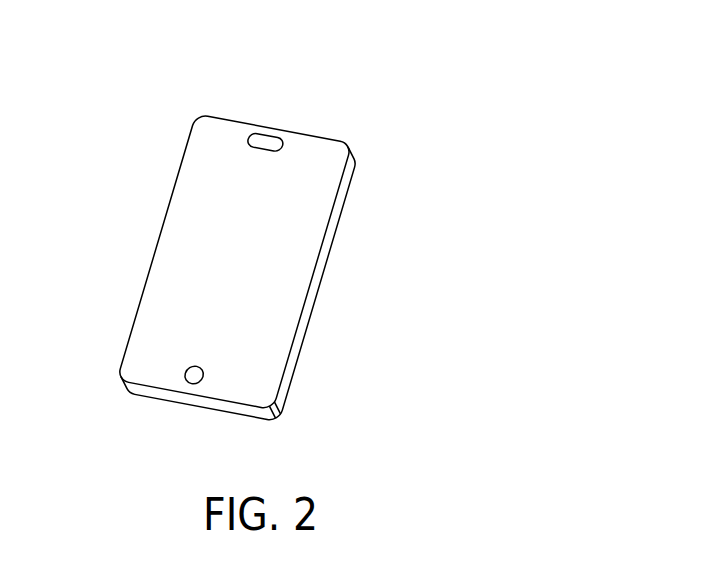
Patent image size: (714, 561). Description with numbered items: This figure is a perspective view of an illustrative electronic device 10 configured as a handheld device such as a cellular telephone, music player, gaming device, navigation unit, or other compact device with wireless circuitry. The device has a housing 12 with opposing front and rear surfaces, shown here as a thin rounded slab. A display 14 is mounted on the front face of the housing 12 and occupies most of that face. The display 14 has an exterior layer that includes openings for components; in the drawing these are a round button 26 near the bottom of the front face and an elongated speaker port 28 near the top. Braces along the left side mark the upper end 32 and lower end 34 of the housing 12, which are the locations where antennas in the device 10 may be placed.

The electronic device 10 is at (433, 129).
The housing 12 is at (334, 241).
The display 14 is at (288, 285).
The button 26 is at (193, 386).
The speaker port 28 is at (280, 138).
The upper end 32 is at (188, 109).
The lower end 34 is at (122, 331).